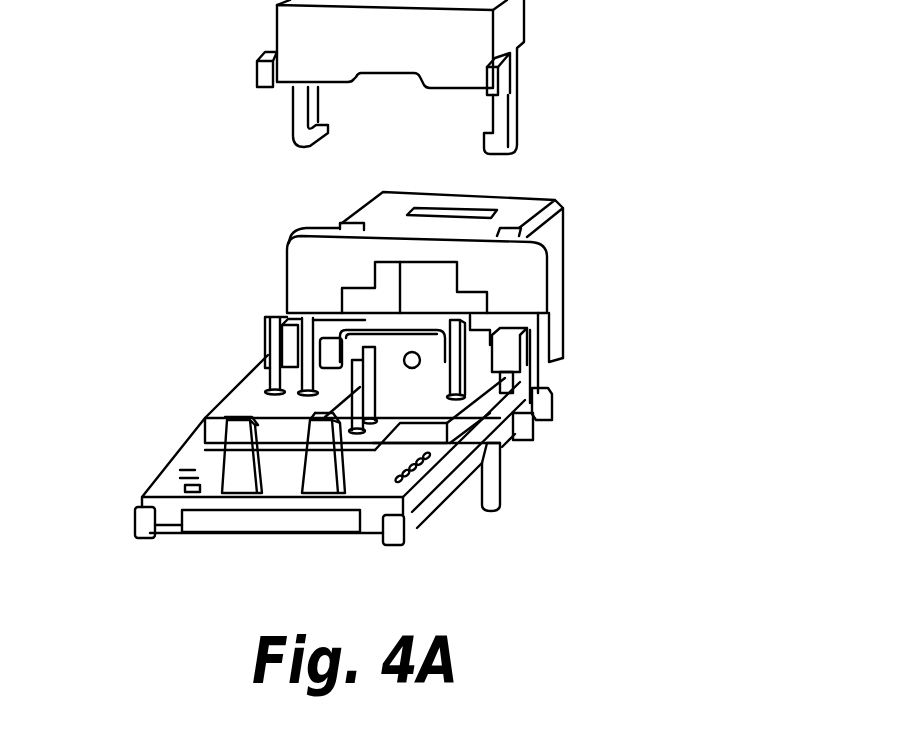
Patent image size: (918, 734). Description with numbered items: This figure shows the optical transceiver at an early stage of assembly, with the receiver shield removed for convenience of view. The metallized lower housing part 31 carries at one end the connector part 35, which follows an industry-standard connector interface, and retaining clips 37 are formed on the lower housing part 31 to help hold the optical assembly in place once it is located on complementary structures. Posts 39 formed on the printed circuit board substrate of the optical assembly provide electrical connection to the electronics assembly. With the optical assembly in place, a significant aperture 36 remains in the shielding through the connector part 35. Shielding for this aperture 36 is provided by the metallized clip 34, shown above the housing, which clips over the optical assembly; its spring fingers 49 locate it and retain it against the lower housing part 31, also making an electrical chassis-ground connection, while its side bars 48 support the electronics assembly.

The lower housing part 31 is at (178, 437).
The metallized clip 34 is at (530, 47).
The connector part 35 is at (284, 265).
The aperture 36 is at (427, 281).
The retaining clips 37 is at (315, 475).
The posts 39 is at (281, 356).
The side bars 48 is at (249, 74).
The spring fingers 49 is at (283, 133).